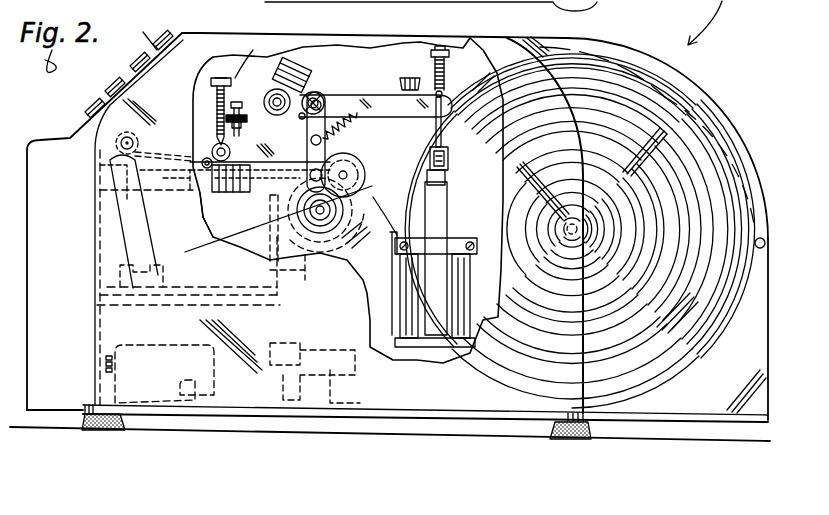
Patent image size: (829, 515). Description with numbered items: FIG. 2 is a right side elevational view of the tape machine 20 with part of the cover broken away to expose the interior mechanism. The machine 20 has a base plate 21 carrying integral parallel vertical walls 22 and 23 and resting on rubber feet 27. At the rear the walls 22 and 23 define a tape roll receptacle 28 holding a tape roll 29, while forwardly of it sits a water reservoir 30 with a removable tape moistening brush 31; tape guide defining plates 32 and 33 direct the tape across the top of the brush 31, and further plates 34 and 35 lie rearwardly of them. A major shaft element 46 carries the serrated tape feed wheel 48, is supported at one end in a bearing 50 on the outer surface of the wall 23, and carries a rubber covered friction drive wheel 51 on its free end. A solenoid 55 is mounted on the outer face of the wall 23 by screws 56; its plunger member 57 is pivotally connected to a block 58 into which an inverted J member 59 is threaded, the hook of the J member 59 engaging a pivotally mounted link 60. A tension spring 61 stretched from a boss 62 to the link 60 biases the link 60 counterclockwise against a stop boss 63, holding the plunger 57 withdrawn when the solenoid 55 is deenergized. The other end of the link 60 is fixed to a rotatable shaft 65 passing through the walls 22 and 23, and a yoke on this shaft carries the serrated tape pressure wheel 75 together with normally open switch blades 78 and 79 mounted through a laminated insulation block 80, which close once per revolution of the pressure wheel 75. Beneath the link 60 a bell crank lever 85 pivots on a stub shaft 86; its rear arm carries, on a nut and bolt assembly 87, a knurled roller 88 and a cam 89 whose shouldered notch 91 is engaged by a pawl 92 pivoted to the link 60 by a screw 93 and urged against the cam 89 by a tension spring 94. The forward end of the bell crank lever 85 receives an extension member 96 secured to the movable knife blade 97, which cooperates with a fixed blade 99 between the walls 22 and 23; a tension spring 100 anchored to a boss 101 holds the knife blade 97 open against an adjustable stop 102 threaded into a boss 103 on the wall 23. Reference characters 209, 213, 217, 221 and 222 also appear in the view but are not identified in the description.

The machine 20 is at (711, 22).
The base plate 21 is at (487, 437).
The vertical wall 22 is at (53, 143).
The vertical wall 23 is at (338, 78).
The rubber feet 27 is at (80, 415).
The tape roll receptacle 28 is at (500, 99).
The tape roll 29 is at (690, 107).
The water reservoir 30 is at (300, 273).
The tape moistening brush 31 is at (127, 237).
The tape guide defining plate 32 is at (166, 143).
The tape guide defining plate 33 is at (157, 196).
The tape guide defining plate 34 is at (247, 193).
The tape guide defining plate 35 is at (262, 208).
The major shaft element 46 is at (353, 203).
The tape feed wheel 48 is at (340, 290).
The bearing 50 is at (277, 255).
The friction drive wheel 51 is at (350, 250).
The solenoid 55 is at (470, 303).
The screws 56 is at (470, 240).
The plunger member 57 is at (437, 210).
The block 58 is at (449, 167).
The inverted J member 59 is at (447, 140).
The link 60 is at (390, 110).
The tension spring 61 is at (450, 72).
The boss 62 is at (450, 53).
The stop boss 63 is at (407, 77).
The rotatable shaft 65 is at (275, 149).
The tape pressure wheel 75 is at (340, 132).
The switch blade 78 is at (340, 75).
The switch blade 79 is at (338, 98).
The laminated insulation block 80 is at (283, 63).
The bell crank lever 85 is at (214, 192).
The stub shaft 86 is at (367, 157).
The nut and bolt assembly 87 is at (367, 172).
The roller 88 is at (347, 150).
The cam 89 is at (360, 1).
The shouldered notch 91 is at (273, 253).
The pawl 92 is at (299, 117).
The screw 93 is at (310, 90).
The tension spring 94 is at (360, 113).
The extension member 96 is at (211, 150).
The knife blade 97 is at (197, 213).
The fixed blade 99 is at (207, 240).
The tension spring 100 is at (213, 98).
The boss 101 is at (245, 55).
The adjustable stop 102 is at (233, 102).
The boss 103 is at (234, 155).
The tab 209 is at (137, 31).
The tab 213 is at (140, 58).
The tab 217 is at (113, 80).
The tab 221 is at (87, 102).
The tab 222 is at (167, 33).